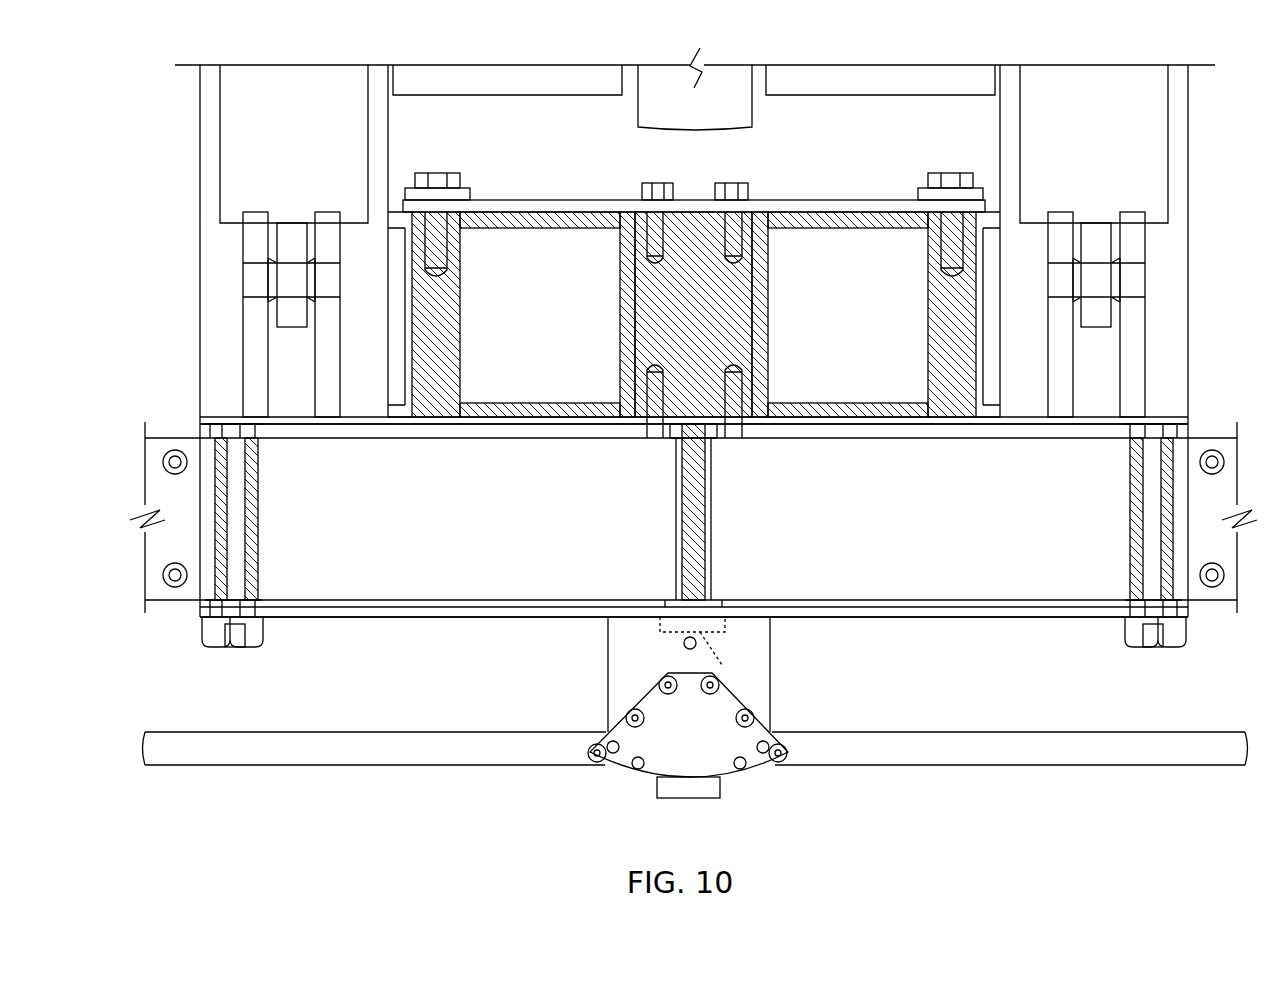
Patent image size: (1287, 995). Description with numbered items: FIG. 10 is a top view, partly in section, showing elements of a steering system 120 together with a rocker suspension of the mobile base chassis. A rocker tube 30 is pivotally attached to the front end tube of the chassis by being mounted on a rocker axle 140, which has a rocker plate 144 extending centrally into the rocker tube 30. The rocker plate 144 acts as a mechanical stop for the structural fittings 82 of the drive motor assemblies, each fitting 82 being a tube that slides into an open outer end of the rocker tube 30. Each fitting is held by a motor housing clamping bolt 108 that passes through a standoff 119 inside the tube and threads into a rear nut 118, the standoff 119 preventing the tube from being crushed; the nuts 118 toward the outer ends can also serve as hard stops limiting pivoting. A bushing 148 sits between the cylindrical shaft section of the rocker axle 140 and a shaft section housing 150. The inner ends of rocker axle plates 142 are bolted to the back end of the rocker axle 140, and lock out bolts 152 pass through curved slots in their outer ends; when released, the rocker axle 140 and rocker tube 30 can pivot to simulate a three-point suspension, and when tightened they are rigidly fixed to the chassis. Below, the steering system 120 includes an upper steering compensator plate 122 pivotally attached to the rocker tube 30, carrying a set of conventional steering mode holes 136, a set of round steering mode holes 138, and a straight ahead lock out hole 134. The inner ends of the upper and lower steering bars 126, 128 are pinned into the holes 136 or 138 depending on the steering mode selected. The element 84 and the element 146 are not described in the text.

The rocker tube 30 is at (1080, 522).
The structural fitting 82 is at (385, 575).
The side bracket 84 is at (1228, 450).
The motor housing clamping bolt 108 is at (210, 628).
The rear nut 118 is at (1127, 432).
The standoff 119 is at (258, 525).
The steering system 120 is at (715, 734).
The upper steering compensator plate 122 is at (752, 700).
The upper steering bar 126 is at (395, 748).
The lower steering bar 128 is at (1070, 748).
The straight ahead lock out hole 134 is at (684, 648).
The conventional steering mode holes 136 is at (610, 755).
The round steering mode holes 138 is at (636, 775).
The rocker axle 140 is at (738, 302).
The rocker axle plates 142 is at (538, 205).
The rocker plate 144 is at (685, 538).
The hidden pin 146 is at (713, 648).
The bushing 148 is at (637, 300).
The shaft section housing 150 is at (762, 345).
The lock out bolts 152 is at (455, 182).